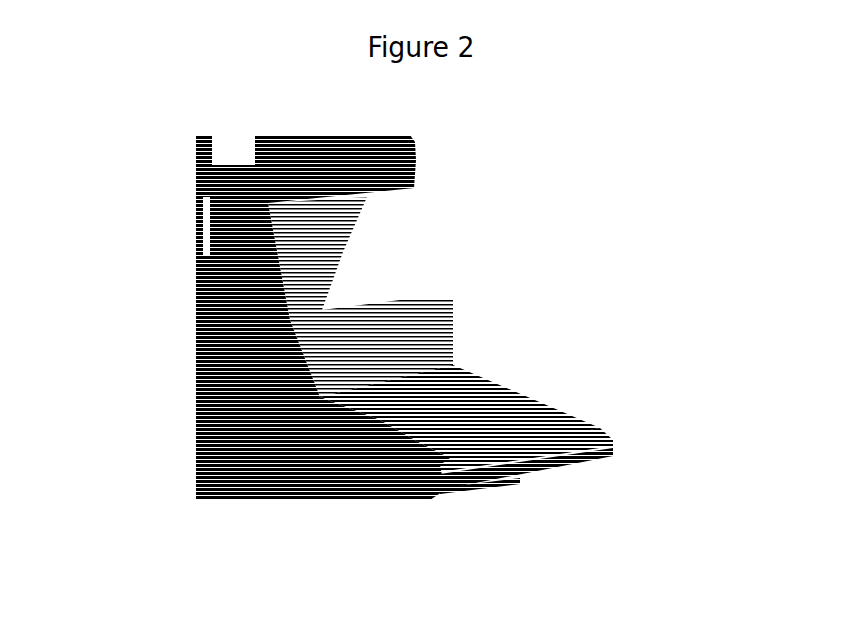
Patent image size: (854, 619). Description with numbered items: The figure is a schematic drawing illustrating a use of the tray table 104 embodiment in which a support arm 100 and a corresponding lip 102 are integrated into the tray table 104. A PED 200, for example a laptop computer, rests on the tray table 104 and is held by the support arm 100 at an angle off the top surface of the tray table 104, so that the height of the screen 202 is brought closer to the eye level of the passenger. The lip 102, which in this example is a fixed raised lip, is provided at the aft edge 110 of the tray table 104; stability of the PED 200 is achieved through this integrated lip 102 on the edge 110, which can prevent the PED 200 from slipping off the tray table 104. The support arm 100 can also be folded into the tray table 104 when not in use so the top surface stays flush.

The support arm 100 is at (373, 443).
The screen 202 is at (408, 237).
The PED 200 is at (477, 372).
The tray table 104 is at (607, 438).
The lip 102 is at (567, 457).
The aft edge 110 is at (516, 492).